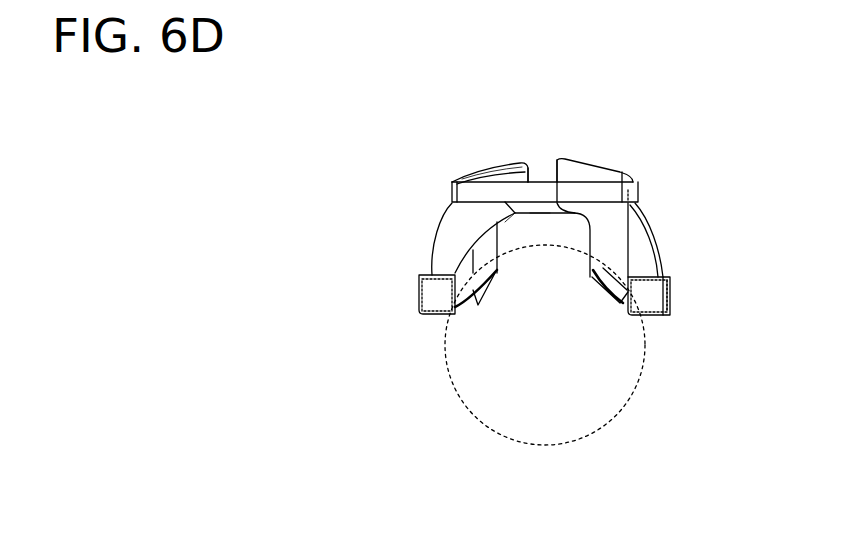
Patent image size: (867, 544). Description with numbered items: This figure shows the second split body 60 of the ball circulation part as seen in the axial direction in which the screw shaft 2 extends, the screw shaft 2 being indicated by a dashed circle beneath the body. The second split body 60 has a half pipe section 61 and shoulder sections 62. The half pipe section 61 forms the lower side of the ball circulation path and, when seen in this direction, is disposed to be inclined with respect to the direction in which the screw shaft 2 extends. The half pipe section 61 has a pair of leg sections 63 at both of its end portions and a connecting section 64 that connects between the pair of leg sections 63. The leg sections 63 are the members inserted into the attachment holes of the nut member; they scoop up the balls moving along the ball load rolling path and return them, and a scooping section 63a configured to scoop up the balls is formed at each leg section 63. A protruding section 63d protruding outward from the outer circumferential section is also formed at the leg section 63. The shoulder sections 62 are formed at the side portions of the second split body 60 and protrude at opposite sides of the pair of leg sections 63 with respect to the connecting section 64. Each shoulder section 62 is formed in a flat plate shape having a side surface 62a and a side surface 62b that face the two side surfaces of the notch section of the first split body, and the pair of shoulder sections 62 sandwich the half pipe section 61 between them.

The screw shaft 2 is at (572, 442).
The second split body 60 is at (446, 216).
The half pipe section 61 is at (510, 230).
The shoulder section 62 is at (482, 160).
The side surface 62a is at (531, 178).
The side surface 62b is at (500, 172).
The leg section 63 is at (410, 297).
The scooping section 63a is at (493, 295).
The protruding section 63d is at (667, 304).
The connecting section 64 is at (541, 228).